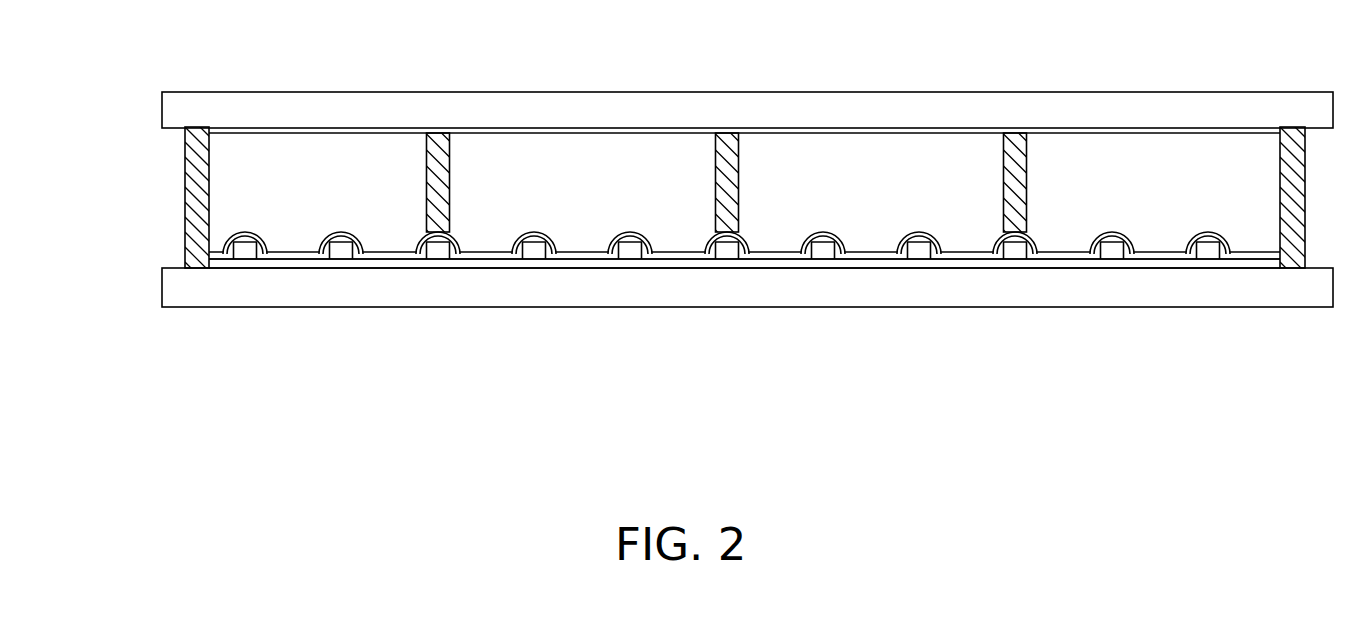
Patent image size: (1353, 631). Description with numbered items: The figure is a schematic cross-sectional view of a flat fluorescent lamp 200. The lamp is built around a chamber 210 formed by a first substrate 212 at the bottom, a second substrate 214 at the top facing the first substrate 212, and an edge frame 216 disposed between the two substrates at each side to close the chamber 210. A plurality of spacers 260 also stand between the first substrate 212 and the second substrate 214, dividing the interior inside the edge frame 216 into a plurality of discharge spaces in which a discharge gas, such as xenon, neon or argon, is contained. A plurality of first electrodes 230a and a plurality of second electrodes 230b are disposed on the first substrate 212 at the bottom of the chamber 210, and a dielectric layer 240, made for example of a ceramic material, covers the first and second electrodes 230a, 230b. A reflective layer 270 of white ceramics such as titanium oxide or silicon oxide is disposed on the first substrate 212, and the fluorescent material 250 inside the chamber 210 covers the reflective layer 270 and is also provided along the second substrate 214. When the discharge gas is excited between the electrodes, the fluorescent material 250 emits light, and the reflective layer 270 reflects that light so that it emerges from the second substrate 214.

The flat fluorescent lamp 200 is at (692, 234).
The chamber 210 is at (692, 199).
The first substrate 212 is at (720, 260).
The second substrate 214 is at (175, 126).
The edge frame 216 is at (185, 185).
The first electrode 230a is at (244, 246).
The second electrode 230b is at (341, 252).
The dielectric layer 240 is at (327, 251).
The fluorescent material 250 is at (312, 131).
The spacer 260 is at (440, 137).
The reflective layer 270 is at (442, 263).